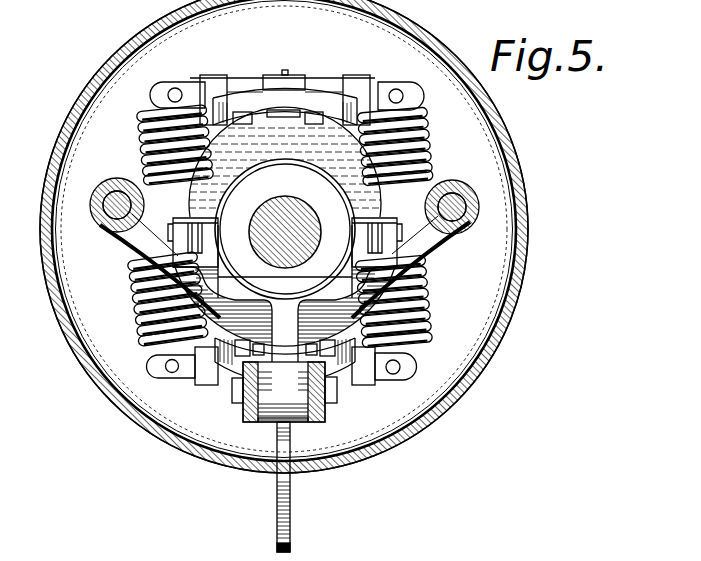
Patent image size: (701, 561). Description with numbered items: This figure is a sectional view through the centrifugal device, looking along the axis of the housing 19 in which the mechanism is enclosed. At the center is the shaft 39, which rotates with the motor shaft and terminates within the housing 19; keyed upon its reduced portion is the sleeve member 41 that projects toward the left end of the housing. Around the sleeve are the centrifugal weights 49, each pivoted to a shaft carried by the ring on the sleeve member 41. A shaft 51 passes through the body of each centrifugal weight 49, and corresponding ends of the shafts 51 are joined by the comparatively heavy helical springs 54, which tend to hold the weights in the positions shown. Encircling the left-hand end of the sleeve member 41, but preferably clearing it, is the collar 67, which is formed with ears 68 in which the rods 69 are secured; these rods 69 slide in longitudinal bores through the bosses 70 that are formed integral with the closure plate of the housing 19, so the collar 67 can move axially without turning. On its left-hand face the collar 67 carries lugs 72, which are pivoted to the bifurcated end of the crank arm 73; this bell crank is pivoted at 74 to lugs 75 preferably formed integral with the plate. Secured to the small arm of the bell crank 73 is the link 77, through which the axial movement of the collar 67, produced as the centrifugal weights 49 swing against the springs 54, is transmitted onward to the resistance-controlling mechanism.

The housing 19 is at (510, 141).
The shaft 39 is at (302, 212).
The sleeve member 41 is at (270, 176).
The centrifugal weight 49 is at (220, 397).
The shaft 51 is at (380, 90).
The helical spring 54 is at (148, 140).
The collar 67 is at (285, 226).
The ear 68 is at (130, 240).
The rod 69 is at (117, 196).
The boss 70 is at (131, 226).
The lug 72 is at (200, 248).
The crank arm 73 is at (297, 290).
The pivot 74 is at (337, 400).
The lug 75 is at (276, 432).
The link 77 is at (292, 438).